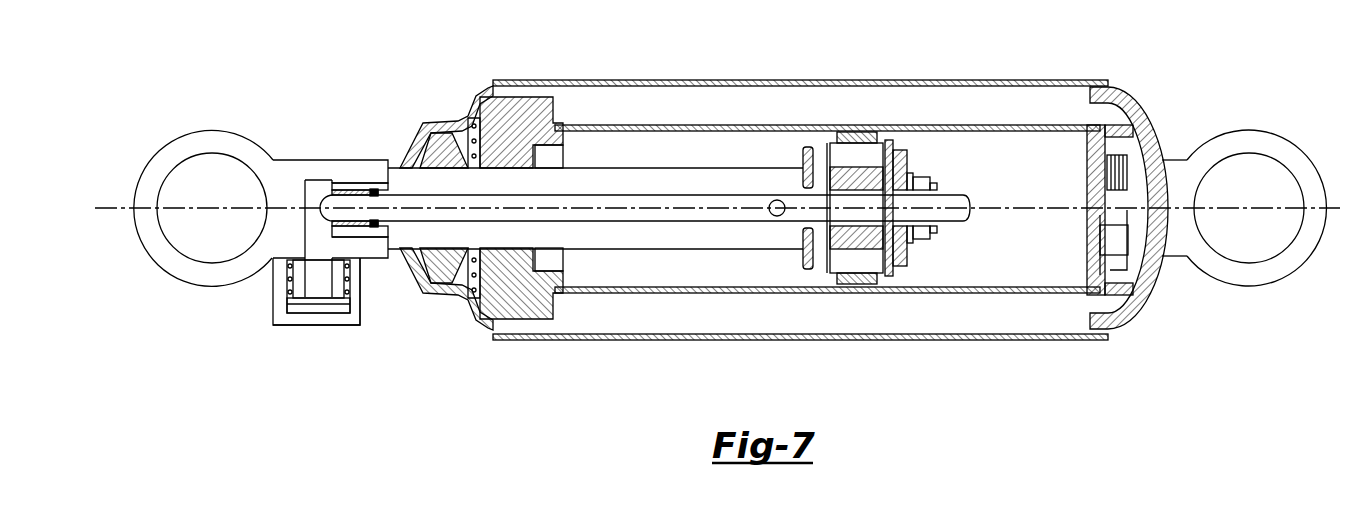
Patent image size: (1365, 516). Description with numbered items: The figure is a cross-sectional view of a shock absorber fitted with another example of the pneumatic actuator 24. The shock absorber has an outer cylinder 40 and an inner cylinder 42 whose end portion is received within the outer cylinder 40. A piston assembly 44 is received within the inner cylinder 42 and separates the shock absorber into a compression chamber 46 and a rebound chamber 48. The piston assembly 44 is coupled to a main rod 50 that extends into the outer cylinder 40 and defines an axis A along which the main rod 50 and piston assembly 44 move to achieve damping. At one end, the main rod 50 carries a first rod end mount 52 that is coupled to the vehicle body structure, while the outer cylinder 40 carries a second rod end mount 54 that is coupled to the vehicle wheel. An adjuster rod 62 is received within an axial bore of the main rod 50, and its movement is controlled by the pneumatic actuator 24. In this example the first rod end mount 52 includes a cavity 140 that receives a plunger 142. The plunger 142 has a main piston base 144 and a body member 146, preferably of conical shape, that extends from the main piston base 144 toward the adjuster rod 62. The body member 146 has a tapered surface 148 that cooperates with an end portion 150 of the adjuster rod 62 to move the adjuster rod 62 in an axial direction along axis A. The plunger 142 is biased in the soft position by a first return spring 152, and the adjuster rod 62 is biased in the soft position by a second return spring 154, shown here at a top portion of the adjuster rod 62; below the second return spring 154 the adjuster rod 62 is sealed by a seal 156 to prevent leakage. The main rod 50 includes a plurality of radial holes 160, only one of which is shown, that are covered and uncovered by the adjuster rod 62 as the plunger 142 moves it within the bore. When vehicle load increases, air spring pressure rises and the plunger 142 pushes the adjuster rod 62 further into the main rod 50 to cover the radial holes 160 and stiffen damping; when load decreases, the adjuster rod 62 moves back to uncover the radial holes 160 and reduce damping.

The pneumatic actuator 24 is at (372, 320).
The outer cylinder 40 is at (500, 78).
The inner cylinder 42 is at (1002, 300).
The piston assembly 44 is at (978, 186).
The compression chamber 46 is at (1042, 278).
The rebound chamber 48 is at (735, 268).
The main rod 50 is at (657, 178).
The first rod end mount 52 is at (277, 199).
The second rod end mount 54 is at (1272, 137).
The adjuster rod 62 is at (575, 203).
The cavity 140 is at (300, 296).
The plunger 142 is at (284, 273).
The main piston base 144 is at (316, 305).
The body member 146 is at (315, 251).
The tapered surface 148 is at (312, 240).
The end portion 150 is at (388, 228).
The first return spring 152 is at (353, 278).
The second return spring 154 is at (367, 190).
The seal 156 is at (388, 192).
The radial holes 160 is at (777, 199).
The axis A is at (1334, 202).